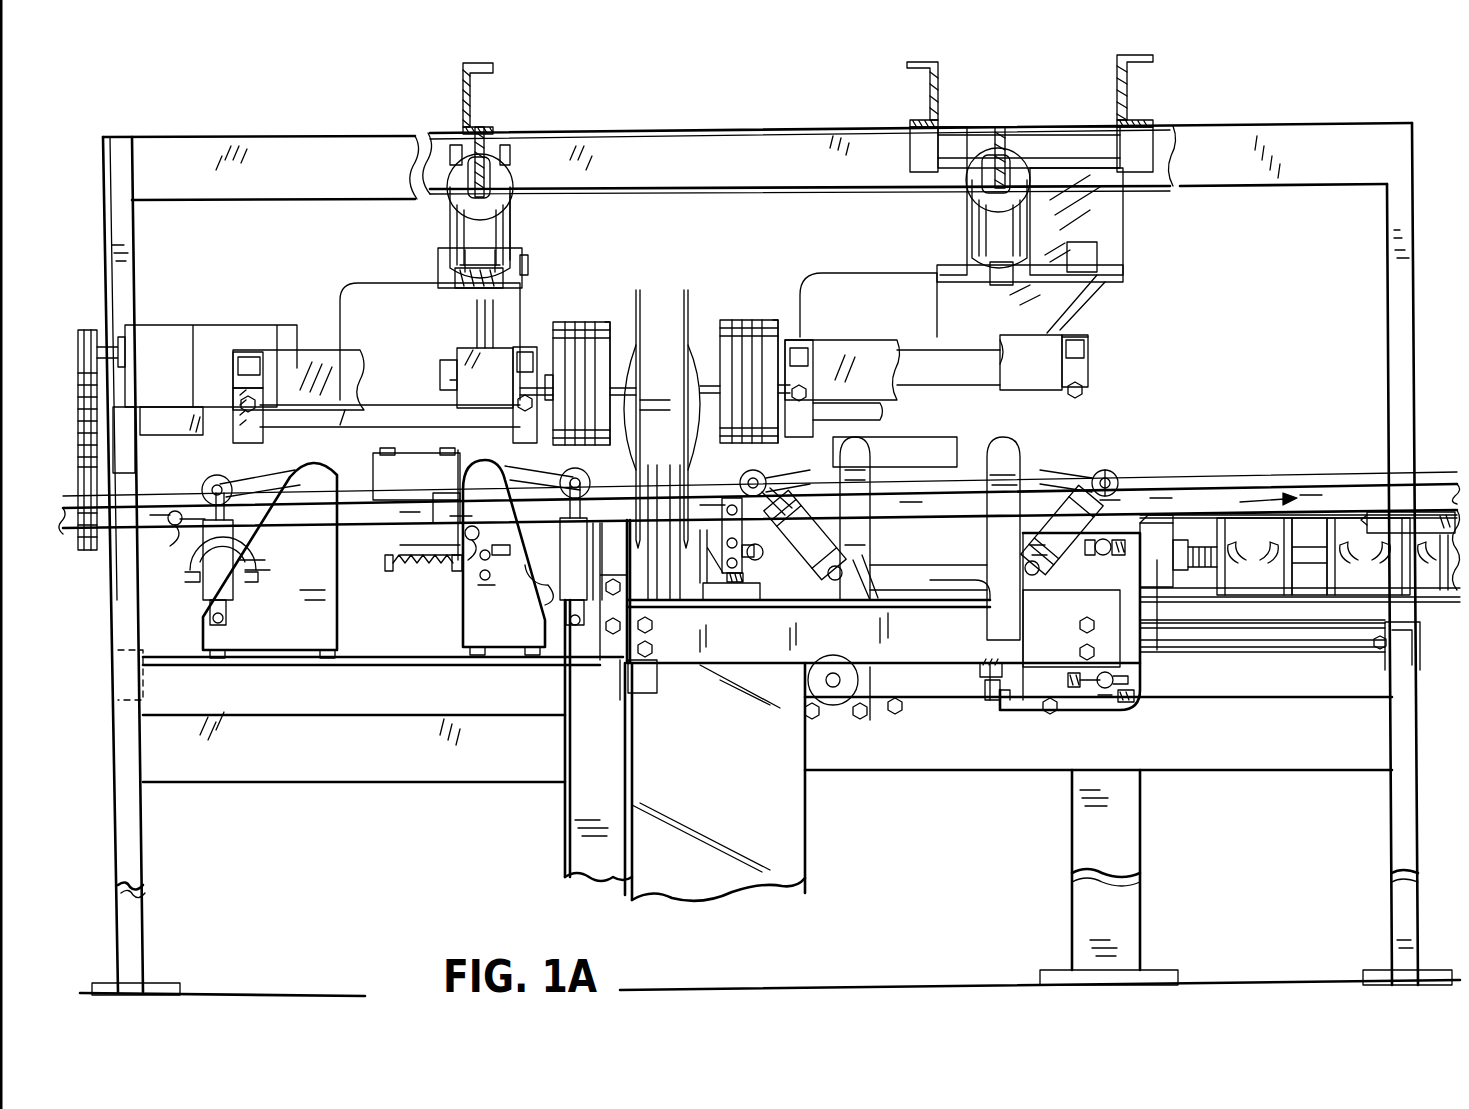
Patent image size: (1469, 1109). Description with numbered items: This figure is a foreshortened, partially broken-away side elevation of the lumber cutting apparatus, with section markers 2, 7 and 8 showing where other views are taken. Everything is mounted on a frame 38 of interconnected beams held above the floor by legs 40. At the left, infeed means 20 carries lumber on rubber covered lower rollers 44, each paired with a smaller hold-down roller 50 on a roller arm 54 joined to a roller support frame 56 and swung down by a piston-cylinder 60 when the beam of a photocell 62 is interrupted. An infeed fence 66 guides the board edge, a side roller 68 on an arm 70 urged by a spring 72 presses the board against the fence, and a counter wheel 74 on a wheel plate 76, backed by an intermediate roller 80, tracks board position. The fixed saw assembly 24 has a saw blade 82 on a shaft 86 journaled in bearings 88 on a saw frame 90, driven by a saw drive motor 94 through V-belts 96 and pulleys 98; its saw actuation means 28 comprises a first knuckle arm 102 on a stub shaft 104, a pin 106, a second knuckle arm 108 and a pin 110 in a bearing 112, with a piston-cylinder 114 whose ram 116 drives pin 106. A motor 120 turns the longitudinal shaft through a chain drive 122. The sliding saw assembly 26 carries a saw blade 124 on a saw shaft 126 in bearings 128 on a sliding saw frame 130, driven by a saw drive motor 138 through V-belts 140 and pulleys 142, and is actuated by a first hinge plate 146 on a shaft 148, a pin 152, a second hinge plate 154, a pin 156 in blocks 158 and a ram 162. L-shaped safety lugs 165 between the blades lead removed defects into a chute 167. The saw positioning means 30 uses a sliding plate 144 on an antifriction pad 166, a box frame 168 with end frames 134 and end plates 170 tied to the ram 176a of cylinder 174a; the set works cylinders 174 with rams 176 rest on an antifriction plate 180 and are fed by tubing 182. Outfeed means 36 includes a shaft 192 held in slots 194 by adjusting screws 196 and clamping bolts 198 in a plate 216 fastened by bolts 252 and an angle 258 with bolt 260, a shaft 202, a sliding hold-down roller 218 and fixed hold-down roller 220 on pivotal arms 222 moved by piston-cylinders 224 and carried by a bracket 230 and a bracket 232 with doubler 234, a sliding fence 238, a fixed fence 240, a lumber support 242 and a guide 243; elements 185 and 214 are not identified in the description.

The section line 2- 2 is at (1412, 62).
The section line 7- 7 is at (300, 450).
The section line 8- 8 is at (858, 400).
The infeed means 20 is at (268, 680).
The fixed saw assembly 24 is at (595, 312).
The sliding saw assembly 26 is at (729, 312).
The saw actuation means 28 is at (438, 210).
The saw positioning means 30 is at (1220, 455).
The outfeed means 36 is at (1120, 426).
The frame 38 is at (412, 136).
The legs 40 is at (148, 905).
The lower rollers 44 is at (190, 560).
The hold-down roller 50 is at (217, 480).
The roller arm 54 is at (285, 482).
The roller support frame 56 is at (402, 559).
The piston-cylinder 60 is at (978, 225).
The photocell 62 is at (173, 510).
The infeed fence 66 is at (390, 500).
The side roller 68 is at (450, 495).
The arm 70 is at (455, 565).
The spring 72 is at (422, 570).
The counter wheel 74 is at (478, 578).
The wheel plate 76 is at (473, 560).
The intermediate roller 80 is at (497, 558).
The saw blade 82 is at (640, 370).
The shaft 86 is at (395, 420).
The bearings 88 is at (520, 420).
The saw frame 90 is at (318, 360).
The saw drive motor 94 is at (368, 305).
The V-belts 96 is at (578, 330).
The pulleys 98 is at (600, 340).
The first knuckle arm 102 is at (477, 327).
The stub shaft 104 is at (455, 380).
The pin 106 is at (530, 272).
The second knuckle arm 108 is at (440, 270).
The pin 110 is at (490, 140).
The bearing 112 is at (498, 134).
The piston-cylinder 114 is at (500, 222).
The extensible ram 116 is at (462, 270).
The motor 120 is at (236, 333).
The chain drive 122 is at (85, 328).
The saw blade 124 is at (682, 320).
The saw shaft 126 is at (705, 420).
The bearings 128 is at (820, 405).
The sliding saw frame 130 is at (1088, 345).
The end frames 134 is at (1150, 515).
The saw drive motor 138 is at (878, 290).
The V-belts 140 is at (757, 326).
The pulleys 142 is at (768, 325).
The sliding plate 144 is at (945, 590).
The first hinge plate 146 is at (1070, 300).
The shaft 148 is at (930, 372).
The pin 152 is at (937, 268).
The second hinge plate 154 is at (1110, 218).
The pin 156 is at (1055, 138).
The blocks 158 is at (910, 128).
The extensible ram 162 is at (1095, 272).
The safety lugs 165 is at (675, 470).
The antifriction pad 166 is at (700, 600).
The chute 167 is at (795, 864).
The box frame 168 is at (1157, 582).
The end plates 170 is at (1175, 540).
The piston-cylinders 174 is at (1388, 583).
The forwardmost cylinder 174a is at (1313, 556).
The rams 176 is at (1310, 548).
The ram 176a is at (1202, 568).
The antifriction plate 180 is at (1303, 595).
The tubing 182 is at (915, 585).
The wheel 185 is at (838, 700).
The shaft 192 is at (1105, 690).
The slots 194 is at (1138, 684).
The adjusting screws 196 is at (1068, 680).
The clamping bolts 198 is at (1108, 540).
The shaft 202 is at (758, 562).
The carriage 214 is at (1105, 500).
The plate 216 is at (982, 705).
The sliding hold-down roller 218 is at (745, 478).
The fixed hold-down roller 220 is at (1108, 470).
The pivotal arms 222 is at (780, 478).
The piston-cylinders 224 is at (812, 570).
The bracket 230 is at (868, 580).
The bracket 232 is at (1071, 628).
The doubler 234 is at (988, 530).
The sliding fence 238 is at (975, 490).
The fixed fence 240 is at (1247, 485).
The lumber support 242 is at (1380, 532).
The guide 243 is at (1400, 492).
The bolts 252 is at (897, 712).
The angle 258 is at (995, 700).
The bolt 260 is at (985, 680).